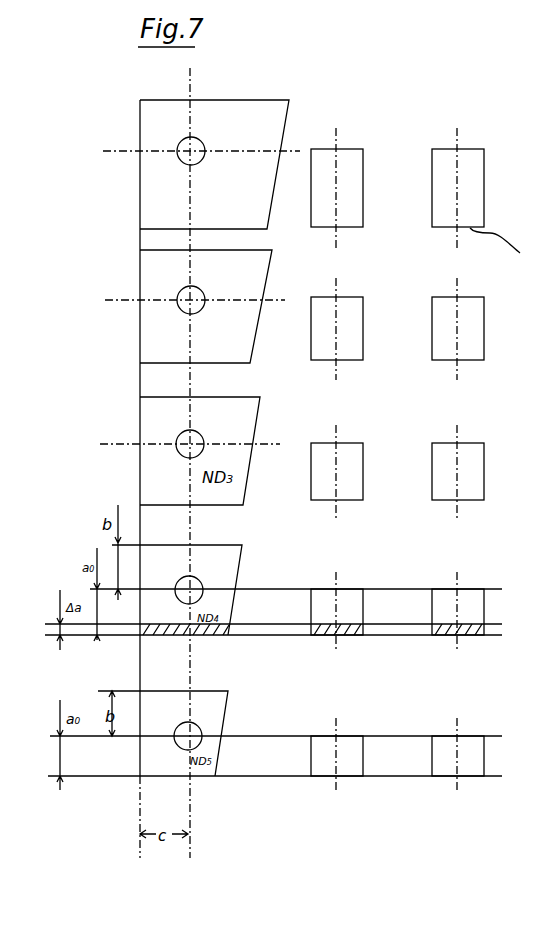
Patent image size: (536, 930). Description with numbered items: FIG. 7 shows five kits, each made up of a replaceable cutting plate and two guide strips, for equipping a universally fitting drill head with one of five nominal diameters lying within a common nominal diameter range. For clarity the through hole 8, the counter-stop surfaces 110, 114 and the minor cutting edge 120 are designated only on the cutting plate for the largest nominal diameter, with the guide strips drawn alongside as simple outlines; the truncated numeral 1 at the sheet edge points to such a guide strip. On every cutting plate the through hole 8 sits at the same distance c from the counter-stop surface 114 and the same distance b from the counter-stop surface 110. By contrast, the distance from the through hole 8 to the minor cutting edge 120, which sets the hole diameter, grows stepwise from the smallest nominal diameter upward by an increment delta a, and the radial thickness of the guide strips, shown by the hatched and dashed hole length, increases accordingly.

The through hole 8 is at (200, 140).
The counter-stop surface 110 is at (165, 99).
The counter-stop surface 114 is at (140, 170).
The minor cutting edge 120 is at (177, 230).
The adjacent component column 1 is at (475, 145).